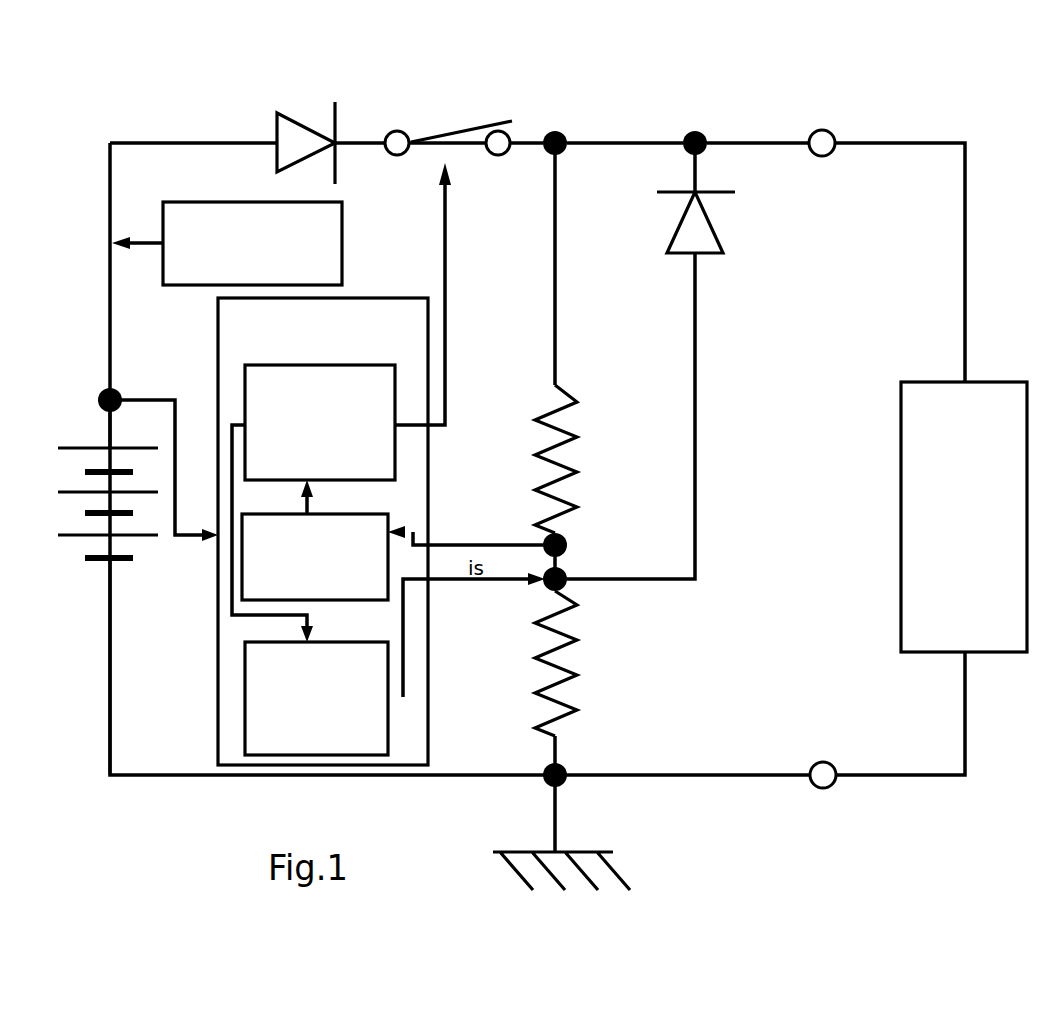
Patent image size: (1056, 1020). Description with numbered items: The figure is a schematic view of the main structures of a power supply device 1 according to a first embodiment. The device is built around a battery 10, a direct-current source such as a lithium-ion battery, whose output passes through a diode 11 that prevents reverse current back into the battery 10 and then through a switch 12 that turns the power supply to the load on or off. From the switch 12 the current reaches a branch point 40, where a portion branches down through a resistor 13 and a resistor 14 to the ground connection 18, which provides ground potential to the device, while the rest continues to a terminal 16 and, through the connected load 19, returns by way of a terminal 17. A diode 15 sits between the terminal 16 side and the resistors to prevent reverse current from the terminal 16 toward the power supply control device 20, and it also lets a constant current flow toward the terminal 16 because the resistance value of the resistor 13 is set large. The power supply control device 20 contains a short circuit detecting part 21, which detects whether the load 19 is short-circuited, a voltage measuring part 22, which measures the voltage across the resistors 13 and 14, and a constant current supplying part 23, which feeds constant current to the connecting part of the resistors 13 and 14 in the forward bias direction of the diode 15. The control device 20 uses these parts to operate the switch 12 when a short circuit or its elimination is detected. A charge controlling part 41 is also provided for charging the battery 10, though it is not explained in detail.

The power supply device 1 is at (626, 96).
The battery 10 is at (100, 566).
The diode 11 is at (300, 121).
The switch 12 is at (466, 128).
The resistor 13 is at (577, 470).
The resistor 14 is at (577, 675).
The diode 15 is at (735, 192).
The terminal 16 is at (823, 130).
The terminal 17 is at (823, 762).
The ground connection 18 is at (608, 852).
The load 19 is at (975, 382).
The power supply control device 20 is at (362, 298).
The short circuit detecting part 21 is at (245, 372).
The voltage measuring part 22 is at (385, 515).
The constant current supplying part 23 is at (245, 670).
The branch point 40 is at (556, 130).
The charge controlling part 41 is at (163, 202).